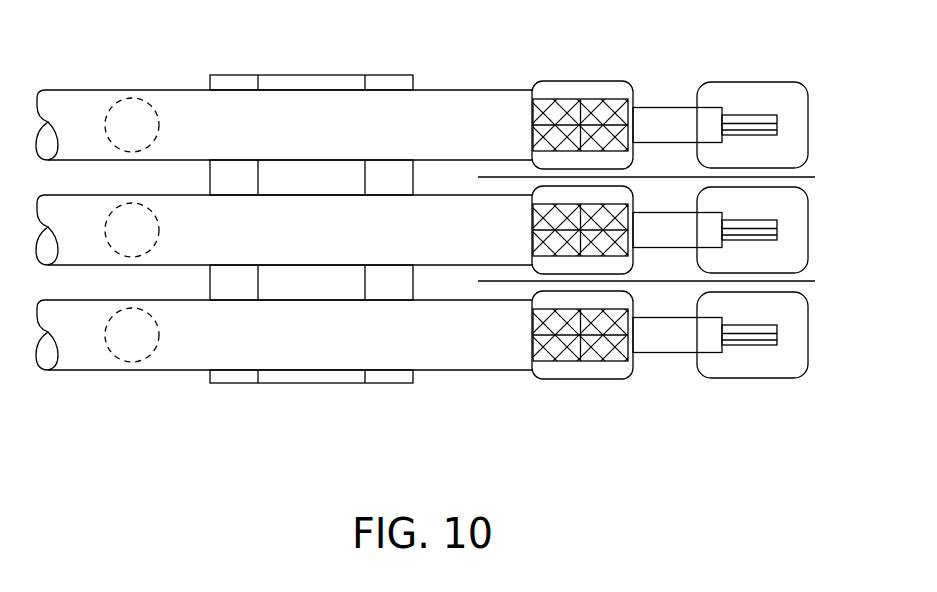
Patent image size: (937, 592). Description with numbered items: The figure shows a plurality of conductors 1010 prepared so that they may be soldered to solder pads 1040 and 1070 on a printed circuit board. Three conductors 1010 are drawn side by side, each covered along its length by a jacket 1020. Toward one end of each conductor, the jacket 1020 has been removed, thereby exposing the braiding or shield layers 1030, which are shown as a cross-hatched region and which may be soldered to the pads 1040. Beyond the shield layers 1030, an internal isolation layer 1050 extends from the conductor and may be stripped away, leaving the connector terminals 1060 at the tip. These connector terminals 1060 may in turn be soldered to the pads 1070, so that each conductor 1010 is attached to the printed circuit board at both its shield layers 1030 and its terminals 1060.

The conductors 1010 is at (77, 90).
The jacket 1020 is at (440, 115).
The braiding or shield layers 1030 is at (573, 105).
The solder pads 1040 is at (578, 370).
The internal isolation layer 1050 is at (672, 338).
The connector terminals 1060 is at (765, 332).
The solder pads 1070 is at (775, 313).